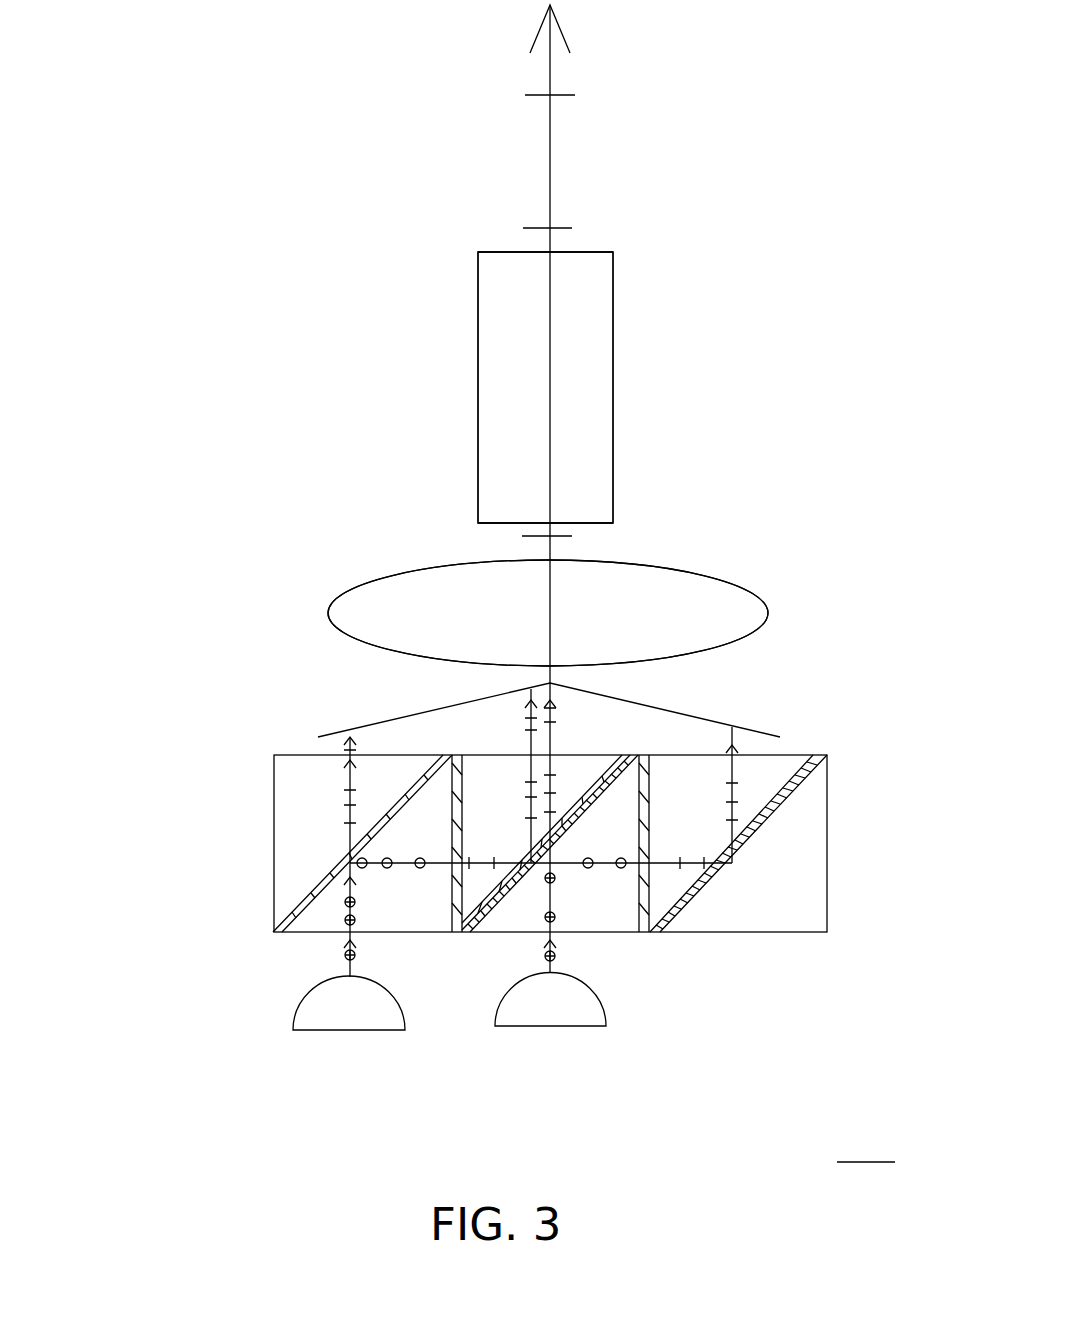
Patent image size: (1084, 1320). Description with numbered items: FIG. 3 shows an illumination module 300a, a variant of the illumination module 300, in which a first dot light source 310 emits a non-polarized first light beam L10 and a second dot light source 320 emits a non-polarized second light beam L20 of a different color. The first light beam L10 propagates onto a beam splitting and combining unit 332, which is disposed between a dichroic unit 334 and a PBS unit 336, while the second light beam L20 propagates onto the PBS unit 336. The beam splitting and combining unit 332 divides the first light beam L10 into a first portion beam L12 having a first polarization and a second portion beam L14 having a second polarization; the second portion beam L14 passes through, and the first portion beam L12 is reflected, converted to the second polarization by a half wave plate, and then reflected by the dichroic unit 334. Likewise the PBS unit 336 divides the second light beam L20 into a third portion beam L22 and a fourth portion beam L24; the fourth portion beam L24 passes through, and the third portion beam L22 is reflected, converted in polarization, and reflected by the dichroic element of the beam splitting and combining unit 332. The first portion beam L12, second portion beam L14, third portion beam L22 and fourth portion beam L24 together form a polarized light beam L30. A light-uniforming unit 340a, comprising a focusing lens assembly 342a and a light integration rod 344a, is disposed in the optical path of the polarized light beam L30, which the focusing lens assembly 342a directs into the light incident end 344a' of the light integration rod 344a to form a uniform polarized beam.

The illumination module 300 is at (196, 849).
The illumination module 300a is at (866, 1143).
The first dot light source 310 is at (557, 1012).
The second dot light source 320 is at (345, 1010).
The beam splitting and combining unit 332 is at (605, 946).
The dichroic unit 334 is at (765, 942).
The PBS unit 336 is at (260, 947).
The light-uniforming unit 340a is at (850, 463).
The focusing lens assembly 342a is at (717, 597).
The light integration rod 344a is at (660, 387).
The light incident end 344a' is at (601, 534).
The first light beam L10 is at (545, 948).
The first portion beam L12 is at (603, 840).
The second portion beam L14 is at (553, 782).
The second light beam L20 is at (357, 948).
The third portion beam L22 is at (403, 867).
The fourth portion beam L24 is at (350, 778).
The polarized light beam L30 is at (550, 668).